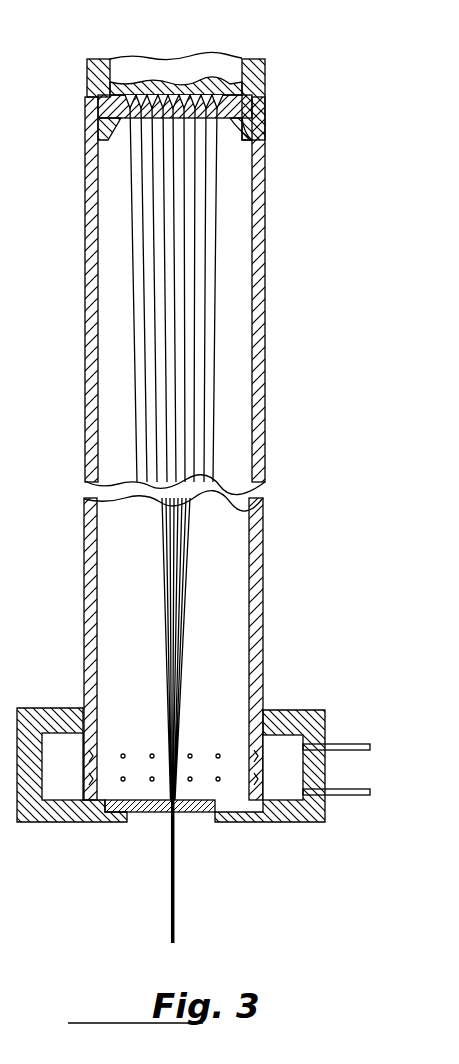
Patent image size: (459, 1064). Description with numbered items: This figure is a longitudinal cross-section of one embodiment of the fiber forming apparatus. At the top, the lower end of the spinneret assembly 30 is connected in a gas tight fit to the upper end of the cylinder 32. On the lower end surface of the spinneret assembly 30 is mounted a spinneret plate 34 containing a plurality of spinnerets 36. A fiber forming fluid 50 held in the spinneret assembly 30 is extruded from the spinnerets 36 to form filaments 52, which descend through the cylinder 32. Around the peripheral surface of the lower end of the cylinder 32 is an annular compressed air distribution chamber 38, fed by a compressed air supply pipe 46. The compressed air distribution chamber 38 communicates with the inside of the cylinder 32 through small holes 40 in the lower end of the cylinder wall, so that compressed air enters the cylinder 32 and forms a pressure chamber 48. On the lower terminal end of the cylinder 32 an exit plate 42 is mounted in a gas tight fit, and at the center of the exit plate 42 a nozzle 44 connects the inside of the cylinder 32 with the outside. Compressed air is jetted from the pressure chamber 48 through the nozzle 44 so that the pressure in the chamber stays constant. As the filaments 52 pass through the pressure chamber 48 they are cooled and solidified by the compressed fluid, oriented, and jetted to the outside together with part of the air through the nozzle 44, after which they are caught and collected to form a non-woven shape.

The spinneret assembly 30 is at (265, 63).
The cylinder 32 is at (265, 222).
The spinneret plate 34 is at (262, 110).
The spinnerets 36 is at (253, 137).
The compressed air distribution chamber 38 is at (297, 712).
The small holes 40 is at (248, 753).
The exit plate 42 is at (202, 805).
The nozzle 44 is at (168, 802).
The compressed air supply pipe 46 is at (355, 748).
The pressure chamber 48 is at (150, 606).
The fiber forming fluid 50 is at (135, 96).
The filaments 52 is at (178, 653).